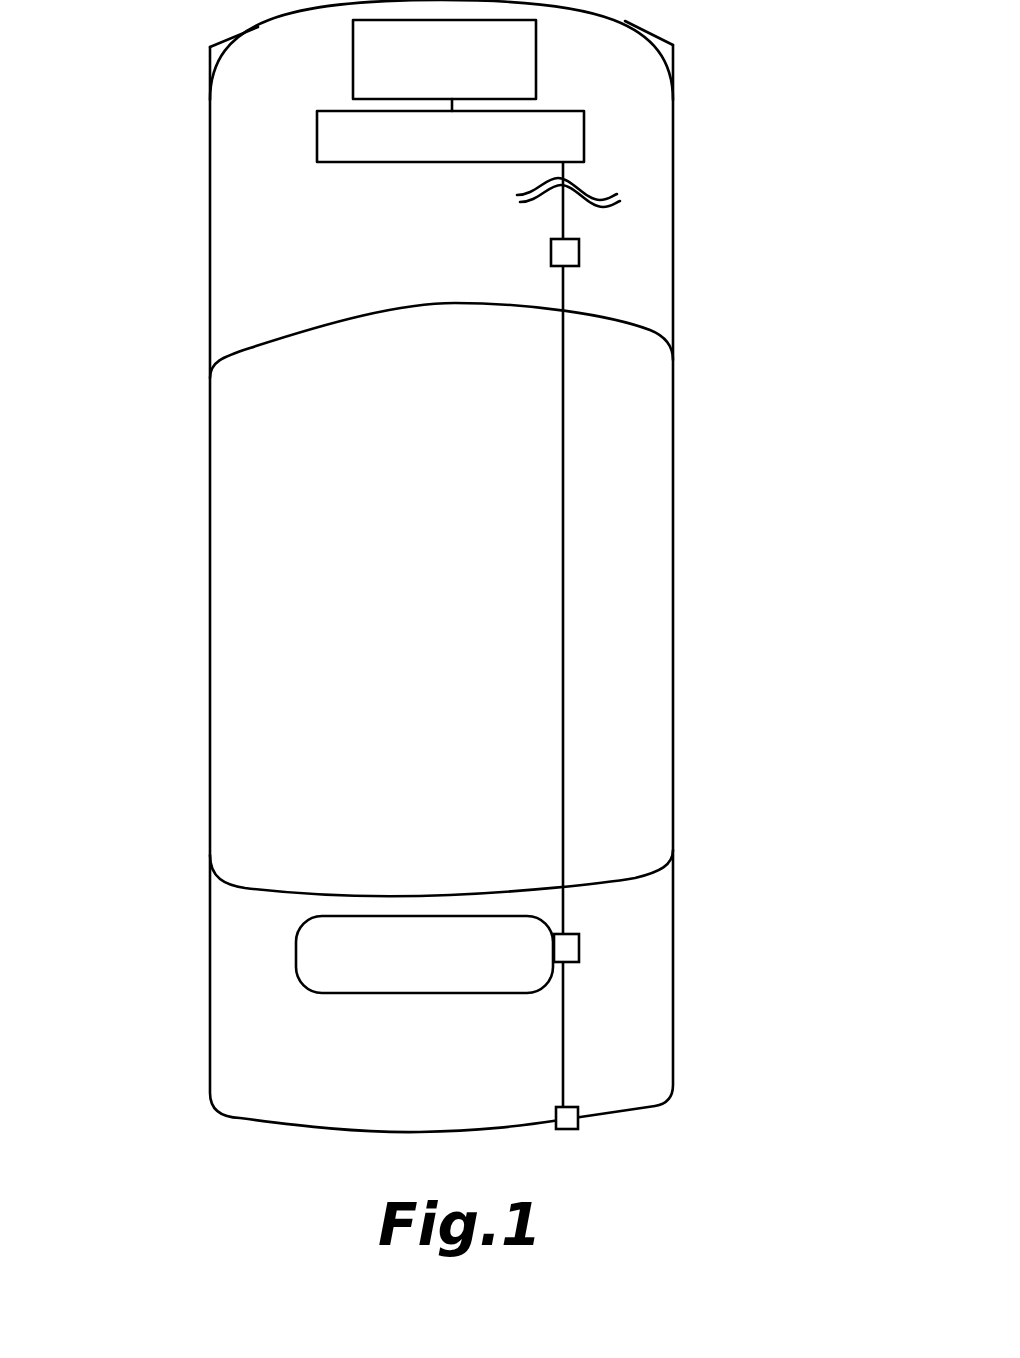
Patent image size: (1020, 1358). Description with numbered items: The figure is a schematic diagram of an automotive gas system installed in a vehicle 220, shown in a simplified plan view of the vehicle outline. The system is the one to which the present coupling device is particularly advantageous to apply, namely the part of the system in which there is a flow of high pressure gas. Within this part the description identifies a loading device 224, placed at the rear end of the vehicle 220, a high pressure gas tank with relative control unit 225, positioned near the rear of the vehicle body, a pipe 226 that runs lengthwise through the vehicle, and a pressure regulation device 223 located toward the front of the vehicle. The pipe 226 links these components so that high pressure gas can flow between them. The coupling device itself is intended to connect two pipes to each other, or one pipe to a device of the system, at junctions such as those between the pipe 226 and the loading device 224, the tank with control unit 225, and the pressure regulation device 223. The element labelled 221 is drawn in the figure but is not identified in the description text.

The vehicle 220 is at (210, 550).
The battery 221 is at (350, 967).
The pressure regulation device 223 is at (579, 250).
The loading device 224 is at (565, 1129).
The high pressure gas tank with relative control unit 225 is at (580, 948).
The pipe 226 is at (565, 616).